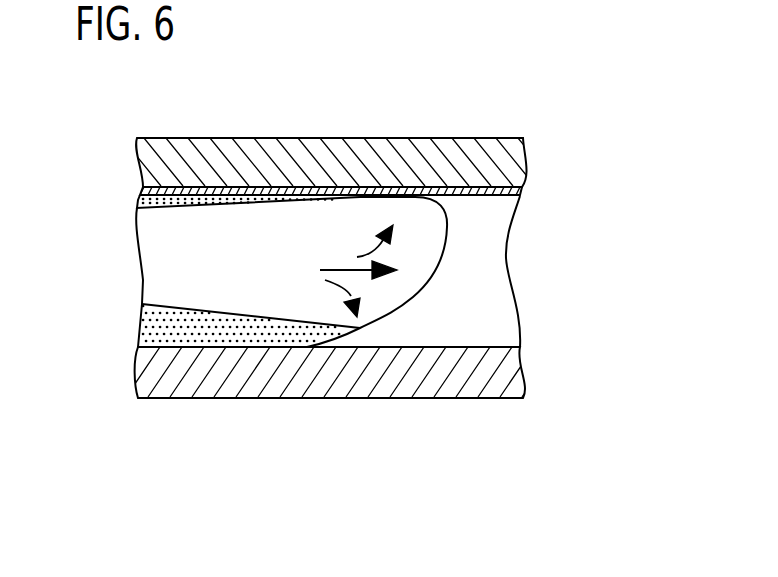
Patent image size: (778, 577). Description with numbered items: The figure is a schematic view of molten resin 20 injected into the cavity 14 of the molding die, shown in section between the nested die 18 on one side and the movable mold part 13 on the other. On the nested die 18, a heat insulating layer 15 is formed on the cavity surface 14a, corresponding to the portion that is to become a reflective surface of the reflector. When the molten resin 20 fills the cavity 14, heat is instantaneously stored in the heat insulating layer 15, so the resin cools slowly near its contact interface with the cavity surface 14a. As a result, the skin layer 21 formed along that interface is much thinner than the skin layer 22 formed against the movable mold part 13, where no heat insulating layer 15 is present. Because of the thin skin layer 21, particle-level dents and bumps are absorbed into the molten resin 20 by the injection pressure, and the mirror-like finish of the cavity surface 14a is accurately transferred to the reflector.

The movable mold part 13 is at (360, 398).
The cavity 14 is at (507, 307).
The cavity surface 14a is at (490, 195).
The heat insulating layer 15 is at (460, 200).
The nested die 18 is at (385, 158).
The molten resin 20 is at (405, 290).
The skin layer 21 is at (193, 207).
The skin layer 22 is at (230, 337).